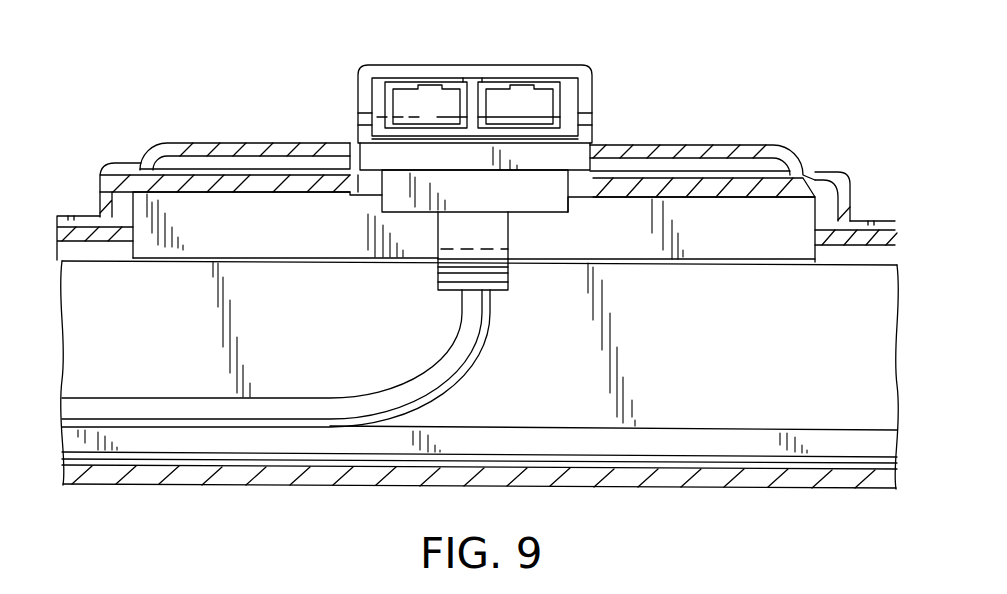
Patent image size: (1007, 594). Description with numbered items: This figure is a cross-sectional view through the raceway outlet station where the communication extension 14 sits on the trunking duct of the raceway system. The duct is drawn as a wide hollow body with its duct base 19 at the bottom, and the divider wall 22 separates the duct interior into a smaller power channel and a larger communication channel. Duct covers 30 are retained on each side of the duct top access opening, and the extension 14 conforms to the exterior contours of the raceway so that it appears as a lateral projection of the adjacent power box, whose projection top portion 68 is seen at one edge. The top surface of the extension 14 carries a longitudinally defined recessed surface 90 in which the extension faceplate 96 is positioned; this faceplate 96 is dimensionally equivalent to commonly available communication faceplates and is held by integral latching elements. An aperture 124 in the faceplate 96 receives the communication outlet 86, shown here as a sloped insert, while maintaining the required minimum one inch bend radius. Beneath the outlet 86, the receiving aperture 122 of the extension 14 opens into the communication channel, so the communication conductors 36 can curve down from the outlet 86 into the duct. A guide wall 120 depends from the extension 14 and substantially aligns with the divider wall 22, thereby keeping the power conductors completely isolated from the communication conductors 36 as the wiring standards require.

The communication extension 14 is at (452, 132).
The duct base 19 is at (610, 480).
The divider wall 22 is at (750, 360).
The duct cover 30 is at (80, 230).
The communication conductors 36 is at (450, 366).
The top portion 68 is at (127, 163).
The communication outlet 86 is at (493, 60).
The recessed surface 90 is at (820, 182).
The extension faceplate 96 is at (702, 145).
The guide wall 120 is at (760, 247).
The receiving aperture 122 is at (297, 182).
The aperture 124 is at (580, 155).